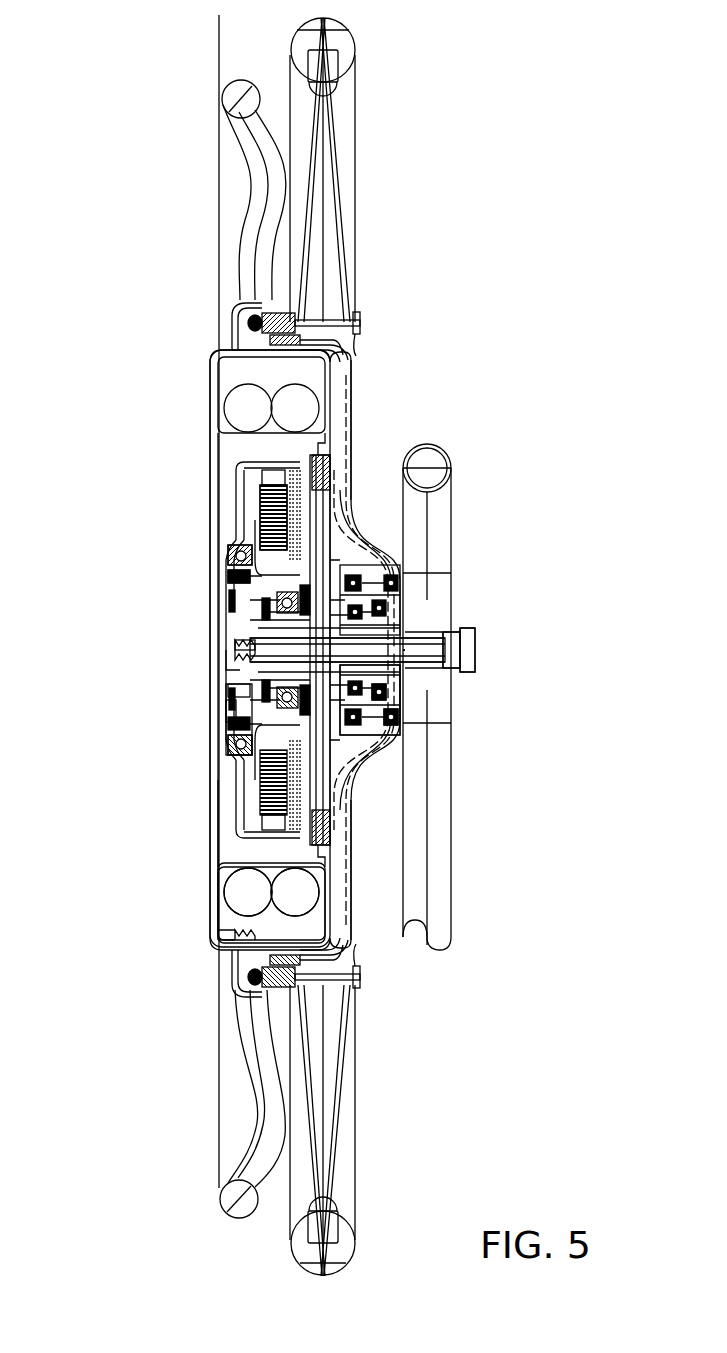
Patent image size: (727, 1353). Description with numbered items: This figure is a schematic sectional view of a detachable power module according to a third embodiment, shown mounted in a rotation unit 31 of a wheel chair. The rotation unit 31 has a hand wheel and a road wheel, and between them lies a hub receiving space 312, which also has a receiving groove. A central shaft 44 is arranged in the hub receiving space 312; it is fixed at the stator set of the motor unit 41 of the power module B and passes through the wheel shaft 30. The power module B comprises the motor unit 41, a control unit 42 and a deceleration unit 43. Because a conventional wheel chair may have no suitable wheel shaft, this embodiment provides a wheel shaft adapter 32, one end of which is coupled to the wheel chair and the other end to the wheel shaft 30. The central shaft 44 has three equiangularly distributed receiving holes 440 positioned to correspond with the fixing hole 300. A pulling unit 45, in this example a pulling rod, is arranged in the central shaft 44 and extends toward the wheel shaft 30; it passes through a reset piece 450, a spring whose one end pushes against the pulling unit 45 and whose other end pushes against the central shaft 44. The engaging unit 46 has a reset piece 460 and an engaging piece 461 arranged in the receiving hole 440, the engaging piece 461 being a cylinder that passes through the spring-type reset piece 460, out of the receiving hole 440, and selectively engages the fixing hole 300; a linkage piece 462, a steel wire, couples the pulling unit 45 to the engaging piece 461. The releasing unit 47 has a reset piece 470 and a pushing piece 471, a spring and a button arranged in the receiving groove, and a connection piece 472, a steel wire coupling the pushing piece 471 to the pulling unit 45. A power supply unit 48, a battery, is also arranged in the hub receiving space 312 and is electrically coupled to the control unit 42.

The wheel shaft 30 is at (390, 603).
The rotation unit 31 is at (195, 128).
The wheel shaft adapter 32 is at (425, 640).
The hub receiving space 312 is at (220, 452).
The motor unit 41 is at (252, 514).
The control unit 42 is at (226, 603).
The deceleration unit 43 is at (322, 515).
The central shaft 44 is at (398, 680).
The receiving hole 440 is at (390, 706).
The pulling unit 45 is at (232, 641).
The reset piece 450 is at (226, 652).
The engaging unit 46 is at (140, 680).
The reset piece 460 is at (228, 690).
The engaging piece 461 is at (226, 742).
The linkage piece 462 is at (226, 710).
The releasing unit 47 is at (118, 840).
The reset piece 470 is at (222, 888).
The pushing piece 471 is at (226, 936).
The connection piece 472 is at (216, 828).
The power supply unit 48 is at (303, 882).
The fixing hole 300 is at (387, 738).
The power module B is at (226, 537).